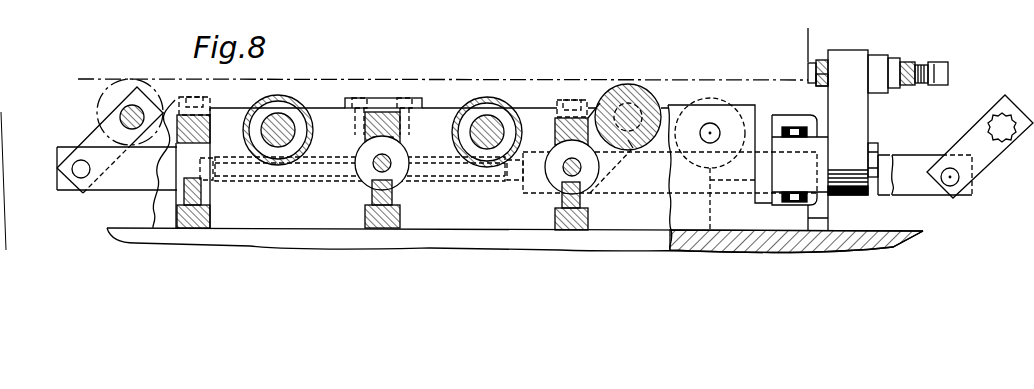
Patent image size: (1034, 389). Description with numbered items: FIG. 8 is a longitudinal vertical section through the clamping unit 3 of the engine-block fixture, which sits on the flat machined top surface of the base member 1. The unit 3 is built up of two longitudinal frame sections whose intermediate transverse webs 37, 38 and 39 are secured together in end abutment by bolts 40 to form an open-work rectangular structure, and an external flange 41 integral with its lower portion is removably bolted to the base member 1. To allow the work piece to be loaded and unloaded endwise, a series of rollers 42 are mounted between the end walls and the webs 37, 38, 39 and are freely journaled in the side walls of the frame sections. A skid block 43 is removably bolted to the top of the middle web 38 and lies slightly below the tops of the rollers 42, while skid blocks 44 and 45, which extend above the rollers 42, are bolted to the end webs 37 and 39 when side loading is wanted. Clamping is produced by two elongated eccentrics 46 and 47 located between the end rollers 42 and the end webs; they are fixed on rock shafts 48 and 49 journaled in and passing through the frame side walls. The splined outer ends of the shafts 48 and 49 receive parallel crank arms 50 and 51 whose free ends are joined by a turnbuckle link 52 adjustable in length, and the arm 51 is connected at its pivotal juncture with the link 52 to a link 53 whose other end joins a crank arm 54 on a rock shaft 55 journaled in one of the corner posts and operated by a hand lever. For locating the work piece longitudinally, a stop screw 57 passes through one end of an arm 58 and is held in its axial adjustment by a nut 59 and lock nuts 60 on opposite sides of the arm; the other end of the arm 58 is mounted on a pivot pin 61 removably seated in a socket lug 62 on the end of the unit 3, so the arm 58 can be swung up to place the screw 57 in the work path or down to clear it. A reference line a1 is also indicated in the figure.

The base member 1 is at (865, 234).
The clamping unit 3 is at (755, 104).
The intermediate transverse web 37 is at (211, 131).
The intermediate transverse web 38 is at (396, 140).
The intermediate transverse web 39 is at (556, 137).
The bolts 40 is at (391, 160).
The external flange 41 is at (828, 218).
The rollers 42 is at (303, 105).
The skid block 43 is at (418, 107).
The skid block 44 is at (213, 99).
The skid block 45 is at (555, 103).
The elongated eccentric 46 is at (107, 86).
The elongated eccentric 47 is at (637, 87).
The rock shaft 48 is at (124, 111).
The rock shaft 49 is at (634, 147).
The crank arm 50 is at (96, 133).
The crank arm 51 is at (613, 170).
The turnbuckle link 52 is at (437, 183).
The link 53 is at (920, 163).
The crank arm 54 is at (993, 155).
The rock shaft 55 is at (992, 133).
The stop screw 57 is at (806, 67).
The arm 58 is at (848, 57).
The nut 59 is at (822, 88).
The lock nuts 60 is at (895, 62).
The pivot pin 61 is at (872, 147).
The socket lug 62 is at (817, 148).
The axis a1 is at (742, 84).